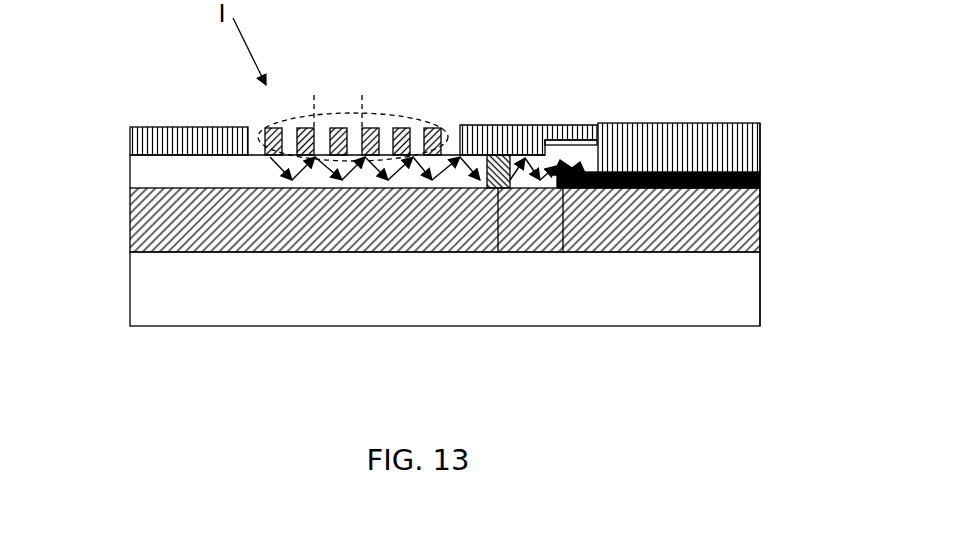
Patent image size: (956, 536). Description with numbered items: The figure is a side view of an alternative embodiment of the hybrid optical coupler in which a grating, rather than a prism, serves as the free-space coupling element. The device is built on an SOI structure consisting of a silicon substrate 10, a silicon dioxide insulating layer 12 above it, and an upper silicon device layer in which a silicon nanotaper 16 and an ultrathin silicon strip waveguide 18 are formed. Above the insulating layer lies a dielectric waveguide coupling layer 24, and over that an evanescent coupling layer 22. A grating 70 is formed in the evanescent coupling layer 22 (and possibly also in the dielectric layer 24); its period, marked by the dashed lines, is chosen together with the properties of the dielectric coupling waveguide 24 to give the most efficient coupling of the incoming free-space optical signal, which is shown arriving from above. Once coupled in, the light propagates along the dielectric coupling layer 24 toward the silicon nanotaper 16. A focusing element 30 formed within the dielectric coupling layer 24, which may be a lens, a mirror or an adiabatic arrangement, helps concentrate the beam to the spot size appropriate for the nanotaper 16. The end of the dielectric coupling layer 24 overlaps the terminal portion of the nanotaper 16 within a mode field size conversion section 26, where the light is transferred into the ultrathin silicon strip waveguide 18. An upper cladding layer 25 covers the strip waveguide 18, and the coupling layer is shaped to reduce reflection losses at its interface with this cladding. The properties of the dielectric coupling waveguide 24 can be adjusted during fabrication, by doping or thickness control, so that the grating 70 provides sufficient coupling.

The silicon substrate 10 is at (143, 297).
The silicon dioxide insulating layer 12 is at (140, 207).
The silicon nanotaper 16 is at (563, 253).
The ultrathin silicon strip waveguide 18 is at (760, 172).
The evanescent coupling layer 22 is at (138, 135).
The dielectric waveguide coupling layer 24 is at (143, 170).
The upper cladding layer 25 is at (683, 133).
The mode field size conversion section 26 is at (585, 155).
The focusing element 30 is at (498, 253).
The grating structure 70 is at (400, 117).